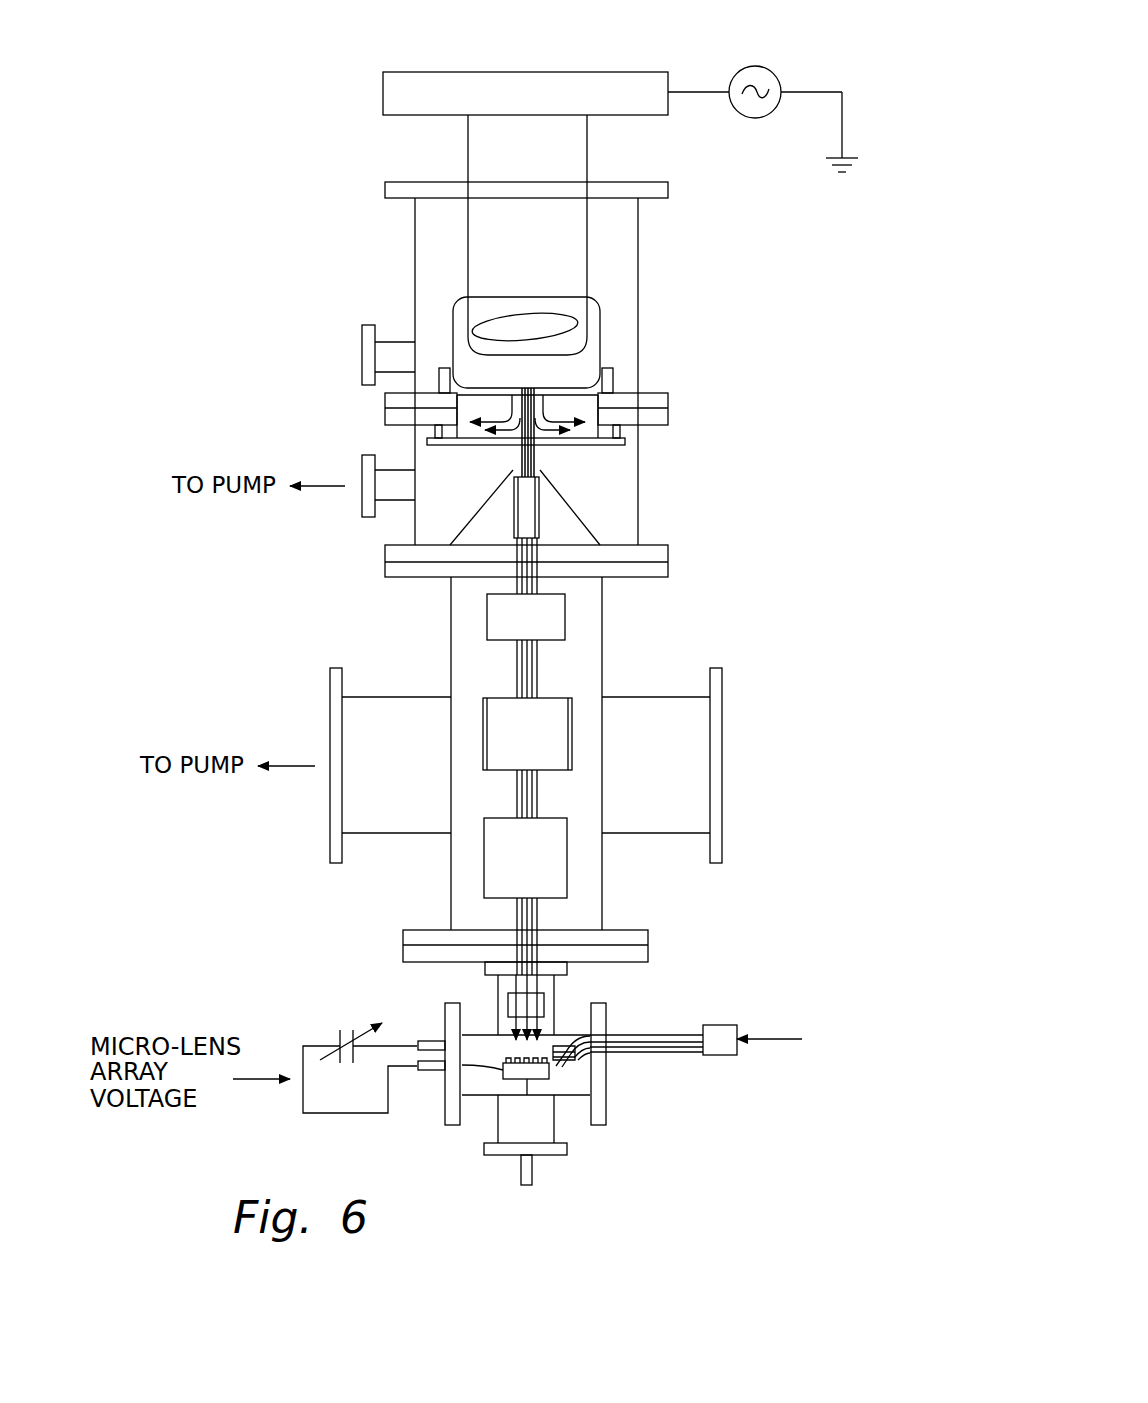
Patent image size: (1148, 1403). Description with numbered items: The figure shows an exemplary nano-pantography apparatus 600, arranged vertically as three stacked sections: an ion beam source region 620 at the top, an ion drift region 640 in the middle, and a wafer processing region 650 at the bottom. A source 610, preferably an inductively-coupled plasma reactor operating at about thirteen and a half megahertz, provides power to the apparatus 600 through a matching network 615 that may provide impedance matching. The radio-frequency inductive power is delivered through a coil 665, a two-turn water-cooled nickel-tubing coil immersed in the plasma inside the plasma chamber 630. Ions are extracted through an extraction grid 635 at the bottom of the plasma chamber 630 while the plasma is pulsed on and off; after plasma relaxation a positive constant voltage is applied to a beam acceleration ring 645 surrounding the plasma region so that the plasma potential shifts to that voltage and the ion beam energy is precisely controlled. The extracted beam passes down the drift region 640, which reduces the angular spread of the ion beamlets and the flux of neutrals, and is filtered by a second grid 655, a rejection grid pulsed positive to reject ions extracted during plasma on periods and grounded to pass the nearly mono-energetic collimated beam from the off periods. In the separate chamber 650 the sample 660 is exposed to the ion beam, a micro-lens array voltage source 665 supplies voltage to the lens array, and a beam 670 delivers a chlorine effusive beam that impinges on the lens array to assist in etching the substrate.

The nano-pantography apparatus 600 is at (237, 168).
The source 610 is at (755, 66).
The matching network 615 is at (427, 72).
The ion beam source region 620 is at (445, 325).
The plasma chamber 630 is at (572, 397).
The extraction grid 635 is at (477, 396).
The drift region 640 is at (650, 505).
The beam acceleration ring 645 is at (610, 337).
The wafer processing region 650 is at (606, 1077).
The second grid 655 is at (687, 933).
The sample 660 is at (560, 1068).
The coil 665 is at (587, 255).
The beam 670 is at (755, 1002).